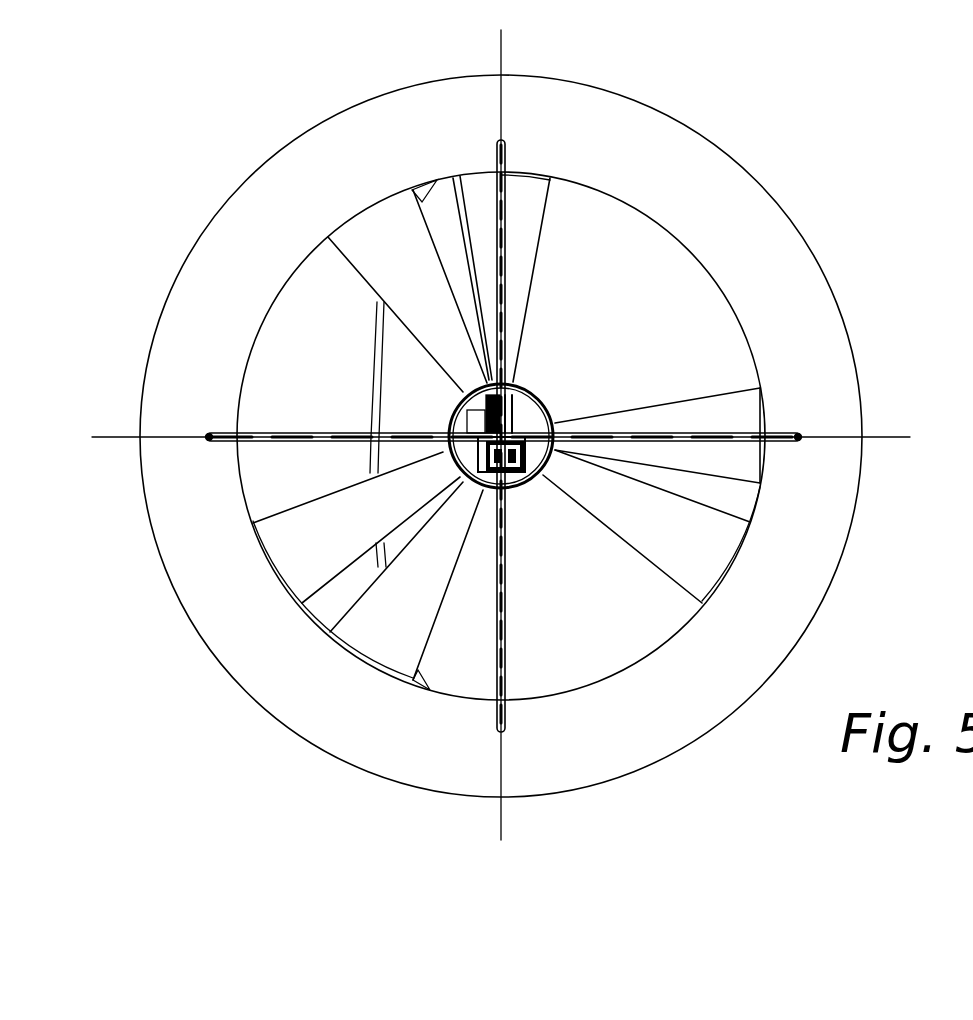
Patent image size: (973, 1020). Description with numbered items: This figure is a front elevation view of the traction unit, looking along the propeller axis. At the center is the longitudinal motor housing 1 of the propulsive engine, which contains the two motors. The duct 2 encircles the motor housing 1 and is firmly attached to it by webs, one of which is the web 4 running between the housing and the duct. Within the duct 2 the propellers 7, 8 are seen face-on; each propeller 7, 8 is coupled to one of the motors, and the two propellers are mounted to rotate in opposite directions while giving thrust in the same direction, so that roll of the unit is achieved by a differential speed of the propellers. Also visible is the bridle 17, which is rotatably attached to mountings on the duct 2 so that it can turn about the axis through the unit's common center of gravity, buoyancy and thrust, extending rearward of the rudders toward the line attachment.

The motor housing 1 is at (545, 392).
The duct 2 is at (793, 233).
The web 4 is at (670, 425).
The propeller 7 is at (530, 272).
The propeller 8 is at (384, 270).
The bridle 17 is at (373, 385).